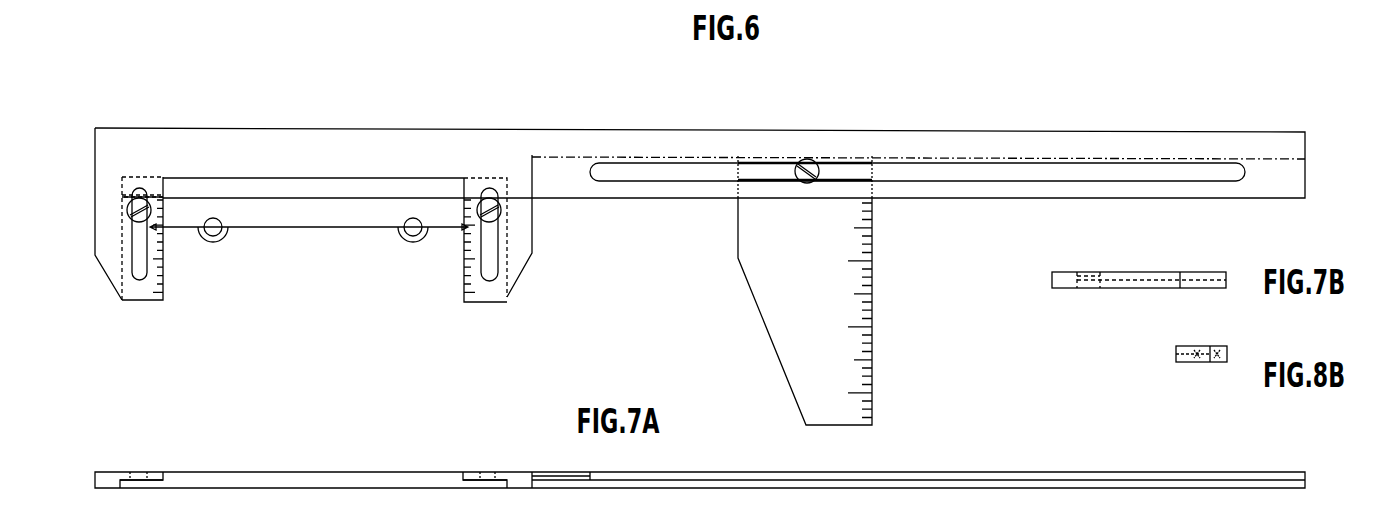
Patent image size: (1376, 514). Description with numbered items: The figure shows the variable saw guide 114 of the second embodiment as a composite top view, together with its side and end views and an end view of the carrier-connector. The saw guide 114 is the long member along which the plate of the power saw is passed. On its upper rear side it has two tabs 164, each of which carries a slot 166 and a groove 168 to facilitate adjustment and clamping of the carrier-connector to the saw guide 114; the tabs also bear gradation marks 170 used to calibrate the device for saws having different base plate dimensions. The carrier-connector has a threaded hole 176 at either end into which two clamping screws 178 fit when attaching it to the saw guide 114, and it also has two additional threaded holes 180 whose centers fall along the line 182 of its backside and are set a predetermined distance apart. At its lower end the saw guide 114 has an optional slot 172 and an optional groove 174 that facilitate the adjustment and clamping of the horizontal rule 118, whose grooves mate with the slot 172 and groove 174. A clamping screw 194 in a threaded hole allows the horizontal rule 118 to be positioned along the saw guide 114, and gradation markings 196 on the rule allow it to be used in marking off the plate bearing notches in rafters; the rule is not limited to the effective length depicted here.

In FIG. 6, the variable saw guide 114 is at (430, 141).
In FIG. 7A, the variable saw guide 114 is at (323, 477).
In FIG. 7B, the variable saw guide 114 is at (1068, 272).
In FIG. 6, the horizontal rule 118 is at (772, 316).
In FIG. 6, the tab 164 is at (113, 265).
In FIG. 6, the slot 166 is at (139, 262).
In FIG. 7A, the slot 166 is at (140, 473).
In FIG. 7A, the groove 168 is at (137, 488).
In FIG. 6, the gradation marks 170 is at (163, 280).
In FIG. 6, the slot 172 is at (671, 168).
In FIG. 7A, the groove 174 is at (682, 488).
In FIG. 8B, the threaded hole 176 is at (1190, 365).
In FIG. 6, the clamping screw 178 is at (126, 206).
In FIG. 8B, the threaded hole 180 is at (1214, 352).
In FIG. 6, the line 182 is at (237, 230).
In FIG. 8B, the line 182 is at (1210, 348).
In FIG. 6, the clamping screw 194 is at (812, 160).
In FIG. 6, the gradation markings 196 is at (868, 340).